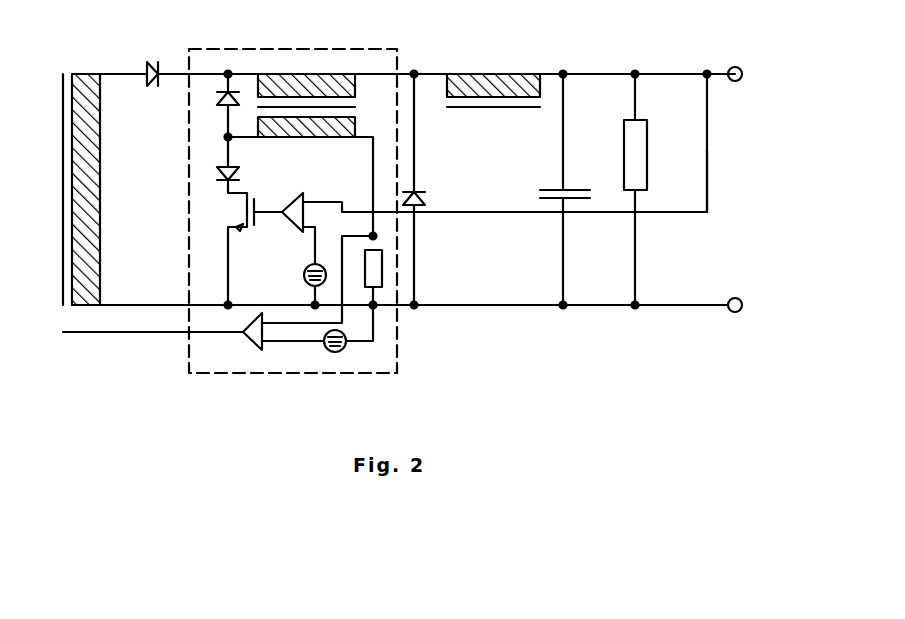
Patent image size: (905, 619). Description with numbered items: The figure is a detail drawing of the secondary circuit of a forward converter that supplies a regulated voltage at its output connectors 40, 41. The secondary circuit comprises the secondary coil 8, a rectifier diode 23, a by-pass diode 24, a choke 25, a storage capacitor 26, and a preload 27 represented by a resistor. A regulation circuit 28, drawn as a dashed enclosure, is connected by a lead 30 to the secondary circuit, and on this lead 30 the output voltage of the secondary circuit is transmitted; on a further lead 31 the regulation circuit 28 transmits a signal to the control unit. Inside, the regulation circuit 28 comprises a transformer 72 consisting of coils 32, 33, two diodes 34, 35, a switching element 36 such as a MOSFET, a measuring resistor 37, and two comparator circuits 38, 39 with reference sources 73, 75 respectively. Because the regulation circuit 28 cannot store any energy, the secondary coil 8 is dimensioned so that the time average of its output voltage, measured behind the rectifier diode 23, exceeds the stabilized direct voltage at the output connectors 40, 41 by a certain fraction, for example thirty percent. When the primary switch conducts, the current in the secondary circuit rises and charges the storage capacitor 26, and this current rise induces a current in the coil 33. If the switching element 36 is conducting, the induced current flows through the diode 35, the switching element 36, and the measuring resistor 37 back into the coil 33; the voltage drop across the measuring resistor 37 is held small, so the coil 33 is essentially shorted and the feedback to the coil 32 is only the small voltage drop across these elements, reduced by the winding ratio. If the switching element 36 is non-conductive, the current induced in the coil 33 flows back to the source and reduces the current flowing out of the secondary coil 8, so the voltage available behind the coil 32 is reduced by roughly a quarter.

The secondary coil 8 is at (88, 185).
The rectifier diode 23 is at (160, 64).
The by-pass diode 24 is at (426, 196).
The choke 25 is at (495, 82).
The storage capacitor 26 is at (570, 190).
The preload 27 is at (640, 160).
The regulation circuit 28 is at (363, 63).
The lead 30 is at (708, 143).
The further lead 31 is at (130, 333).
The coil 32 is at (295, 82).
The coil 33 is at (348, 127).
The diode 34 is at (232, 92).
The diode 35 is at (221, 178).
The switching element 36 is at (232, 215).
The measuring resistor 37 is at (382, 268).
The comparator circuit 38 is at (295, 205).
The comparator circuit 39 is at (256, 335).
The output connector 40 is at (741, 69).
The output connector 41 is at (741, 301).
The transformer 72 is at (355, 106).
The reference source 73 is at (303, 272).
The reference source 75 is at (330, 353).